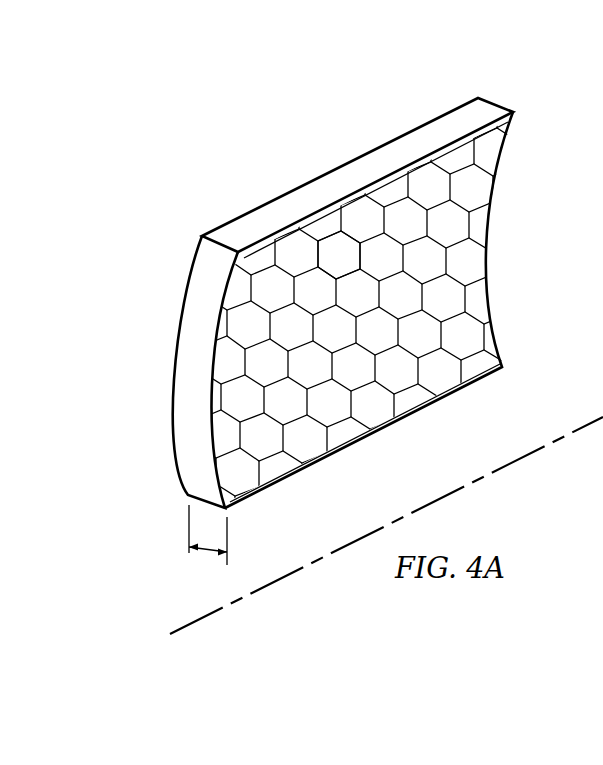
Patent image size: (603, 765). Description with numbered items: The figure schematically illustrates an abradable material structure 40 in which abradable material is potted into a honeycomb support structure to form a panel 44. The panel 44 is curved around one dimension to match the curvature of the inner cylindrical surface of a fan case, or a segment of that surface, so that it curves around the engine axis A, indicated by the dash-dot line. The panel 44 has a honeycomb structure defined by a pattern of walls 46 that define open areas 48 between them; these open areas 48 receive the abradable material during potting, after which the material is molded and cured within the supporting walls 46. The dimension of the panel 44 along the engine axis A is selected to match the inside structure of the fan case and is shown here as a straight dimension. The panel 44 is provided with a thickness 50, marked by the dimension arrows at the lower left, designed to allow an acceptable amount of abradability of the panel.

The structure 40 is at (162, 216).
The panel 44 is at (496, 102).
The walls 46 is at (377, 197).
The open areas 48 is at (332, 255).
The thickness 50 is at (207, 553).
The engine axis A is at (602, 390).